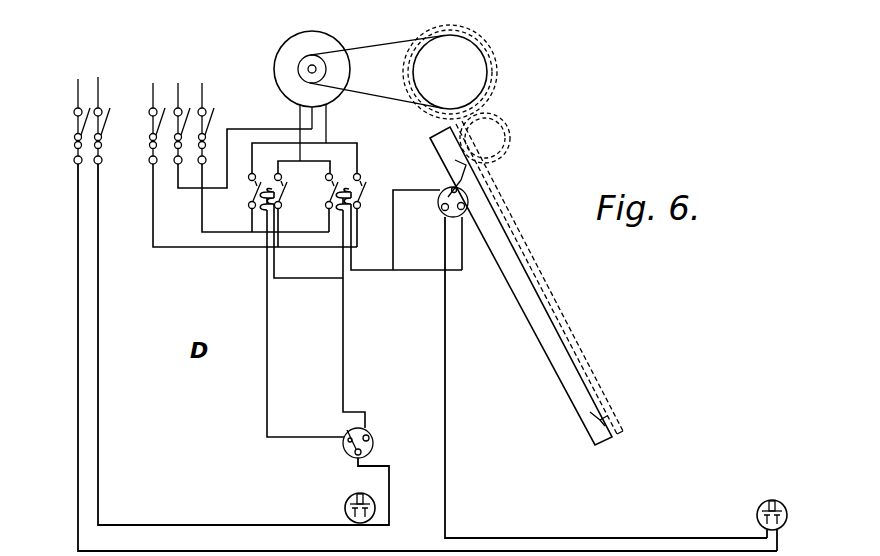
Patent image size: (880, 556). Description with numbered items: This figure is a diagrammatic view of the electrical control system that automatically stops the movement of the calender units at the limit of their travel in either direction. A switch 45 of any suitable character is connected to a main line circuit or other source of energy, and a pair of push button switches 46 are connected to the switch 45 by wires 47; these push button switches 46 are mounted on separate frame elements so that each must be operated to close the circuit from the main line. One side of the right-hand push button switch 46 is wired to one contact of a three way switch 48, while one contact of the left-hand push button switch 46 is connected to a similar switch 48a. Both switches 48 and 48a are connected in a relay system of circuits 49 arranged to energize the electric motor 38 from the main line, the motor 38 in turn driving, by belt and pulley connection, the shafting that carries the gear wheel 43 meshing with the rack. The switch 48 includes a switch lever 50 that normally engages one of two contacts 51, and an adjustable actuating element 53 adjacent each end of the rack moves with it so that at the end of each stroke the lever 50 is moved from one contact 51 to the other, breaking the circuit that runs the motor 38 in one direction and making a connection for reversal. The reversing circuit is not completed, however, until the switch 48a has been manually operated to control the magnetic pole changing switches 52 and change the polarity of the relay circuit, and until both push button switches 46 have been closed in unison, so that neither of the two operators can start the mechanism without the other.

The electric motor 38 is at (276, 62).
The gear wheel 43 is at (511, 138).
The switch 45 is at (123, 120).
The push button switches 46 is at (348, 500).
The wires 47 is at (278, 551).
The three way switch 48 is at (469, 201).
The pole changing switch 48a is at (374, 445).
The relay system of circuits 49 is at (199, 243).
The switch lever 50 is at (482, 185).
The contacts 51 is at (448, 191).
The magnetic pole changing switches 52 is at (289, 193).
The adjustable actuating element 53 is at (442, 158).